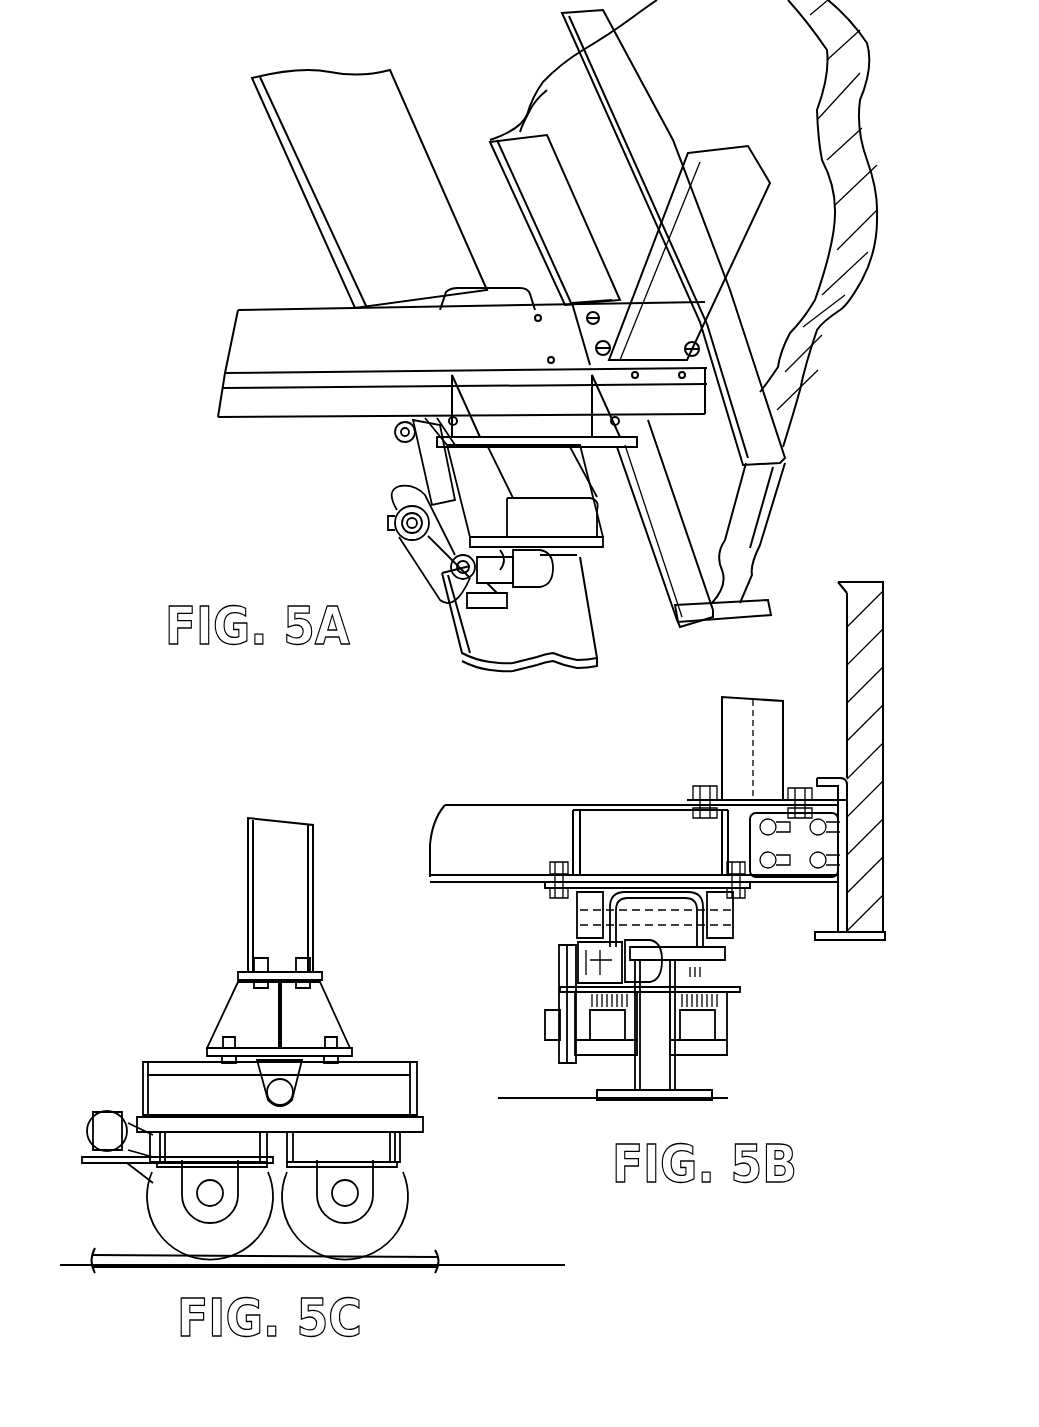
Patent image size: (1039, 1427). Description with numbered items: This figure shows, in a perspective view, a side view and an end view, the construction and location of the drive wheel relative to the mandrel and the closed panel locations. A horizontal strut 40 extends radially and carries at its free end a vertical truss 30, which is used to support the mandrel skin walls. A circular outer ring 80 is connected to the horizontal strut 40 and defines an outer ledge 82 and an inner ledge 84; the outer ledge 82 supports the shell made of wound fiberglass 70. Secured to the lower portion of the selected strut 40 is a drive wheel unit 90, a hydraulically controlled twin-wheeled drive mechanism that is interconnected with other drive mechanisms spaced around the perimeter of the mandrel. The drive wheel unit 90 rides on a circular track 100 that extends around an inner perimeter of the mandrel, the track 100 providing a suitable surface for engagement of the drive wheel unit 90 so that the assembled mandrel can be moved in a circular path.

In FIG. 5A, the vertical truss 30 is at (729, 246).
In FIG. 5B, the vertical truss 30 is at (745, 736).
In FIG. 5C, the vertical truss 30 is at (270, 897).
In FIG. 5A, the horizontal strut 40 is at (335, 333).
In FIG. 5B, the horizontal strut 40 is at (521, 801).
In FIG. 5A, the wound fiberglass 70 is at (814, 310).
In FIG. 5B, the wound fiberglass 70 is at (878, 682).
In FIG. 5A, the circular outer ring 80 is at (748, 487).
In FIG. 5B, the circular outer ring 80 is at (841, 777).
In FIG. 5A, the outer ledge 82 is at (746, 598).
In FIG. 5B, the outer ledge 82 is at (866, 943).
In FIG. 5A, the inner ledge 84 is at (697, 620).
In FIG. 5B, the inner ledge 84 is at (832, 946).
In FIG. 5A, the drive wheel unit 90 is at (440, 495).
In FIG. 5B, the drive wheel unit 90 is at (725, 953).
In FIG. 5C, the drive wheel unit 90 is at (165, 1042).
In FIG. 5A, the circular track 100 is at (480, 628).
In FIG. 5B, the circular track 100 is at (693, 1077).
In FIG. 5C, the circular track 100 is at (413, 1253).